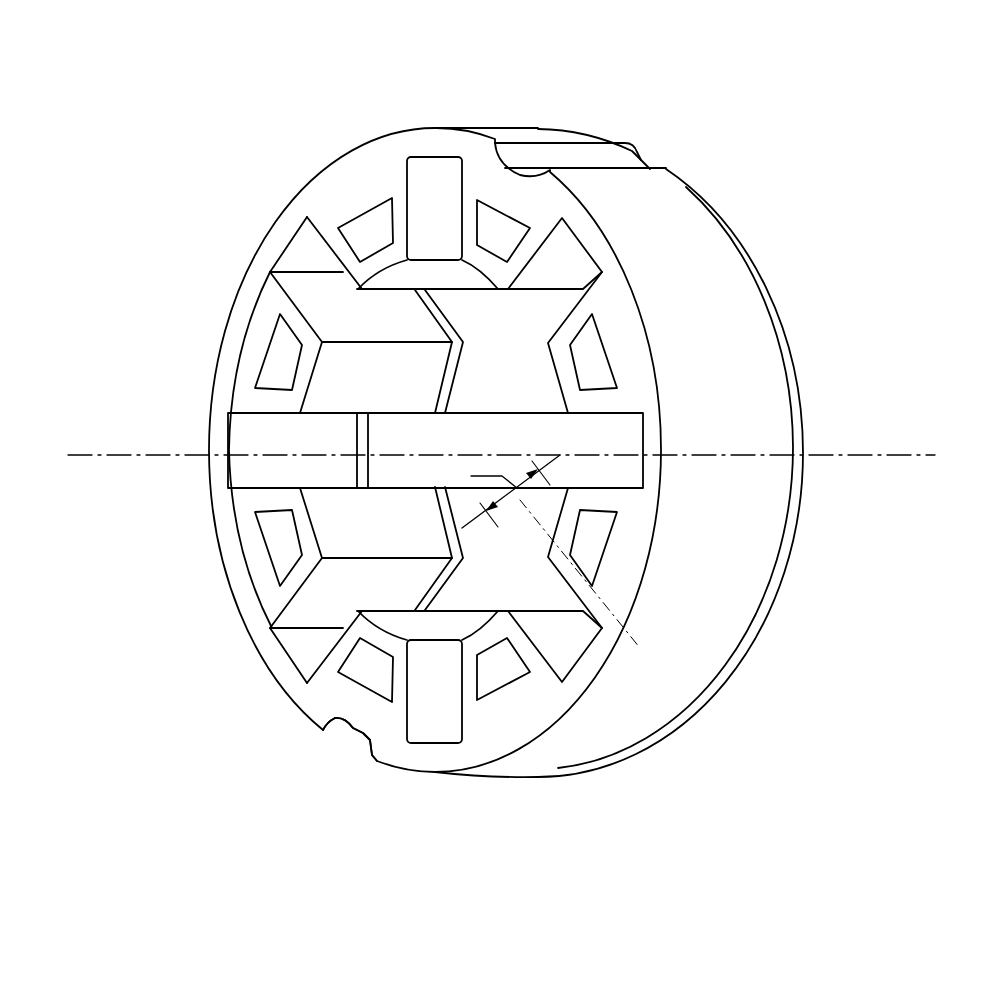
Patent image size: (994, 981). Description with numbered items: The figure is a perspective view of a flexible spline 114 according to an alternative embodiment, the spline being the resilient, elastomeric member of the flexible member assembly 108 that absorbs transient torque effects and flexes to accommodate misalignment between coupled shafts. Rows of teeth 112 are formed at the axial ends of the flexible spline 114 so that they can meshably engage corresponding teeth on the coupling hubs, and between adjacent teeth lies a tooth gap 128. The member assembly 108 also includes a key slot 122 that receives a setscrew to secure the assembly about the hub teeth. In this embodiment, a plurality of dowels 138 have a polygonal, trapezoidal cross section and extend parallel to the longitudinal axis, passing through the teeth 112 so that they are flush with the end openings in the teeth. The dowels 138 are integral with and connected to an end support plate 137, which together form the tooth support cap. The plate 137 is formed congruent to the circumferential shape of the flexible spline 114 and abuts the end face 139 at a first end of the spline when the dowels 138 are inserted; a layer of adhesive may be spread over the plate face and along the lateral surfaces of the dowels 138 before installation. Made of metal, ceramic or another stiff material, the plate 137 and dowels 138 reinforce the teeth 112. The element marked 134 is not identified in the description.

The flexible member assembly 108 is at (219, 123).
The teeth 112 is at (422, 375).
The flexible spline 114 is at (725, 594).
The key slot 122 is at (661, 154).
The tooth gap 128 is at (300, 655).
The lower slot 134 is at (267, 548).
The end support plate 137 is at (752, 248).
The dowels 138 is at (273, 357).
The end face 139 is at (780, 323).